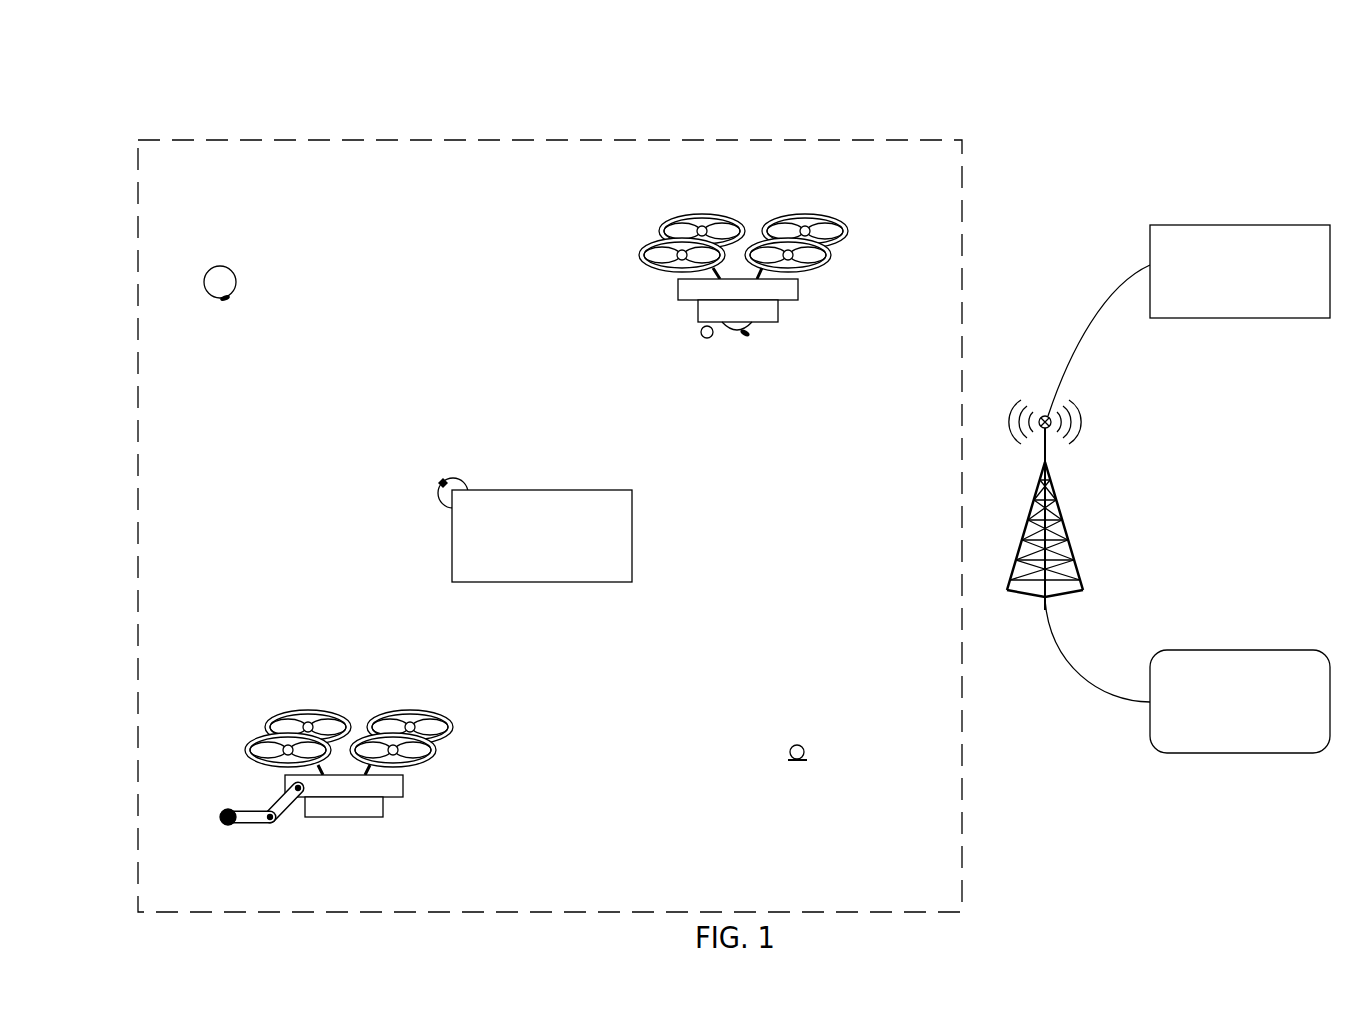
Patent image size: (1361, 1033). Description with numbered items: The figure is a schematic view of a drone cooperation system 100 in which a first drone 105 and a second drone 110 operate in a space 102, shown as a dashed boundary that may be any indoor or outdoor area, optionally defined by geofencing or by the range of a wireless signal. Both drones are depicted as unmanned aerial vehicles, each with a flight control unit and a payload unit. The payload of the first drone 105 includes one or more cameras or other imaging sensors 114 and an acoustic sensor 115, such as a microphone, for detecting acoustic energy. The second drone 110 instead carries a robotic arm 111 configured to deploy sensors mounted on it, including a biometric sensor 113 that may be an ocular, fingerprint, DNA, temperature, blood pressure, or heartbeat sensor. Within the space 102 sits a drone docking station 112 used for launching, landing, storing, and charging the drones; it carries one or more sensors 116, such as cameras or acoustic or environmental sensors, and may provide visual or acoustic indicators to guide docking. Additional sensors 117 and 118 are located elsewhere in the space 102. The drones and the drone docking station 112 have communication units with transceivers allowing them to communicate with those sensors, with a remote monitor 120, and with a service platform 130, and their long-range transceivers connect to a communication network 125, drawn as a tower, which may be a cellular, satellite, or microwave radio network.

The drone cooperation system 100 is at (1196, 62).
The space 102 is at (928, 140).
The first drone 105 is at (798, 297).
The second drone 110 is at (403, 793).
The robotic arm 111 is at (278, 797).
The drone docking station 112 is at (533, 582).
The biometric sensor 113 is at (236, 820).
The imaging sensor 114 is at (746, 337).
The acoustic sensor 115 is at (704, 334).
The sensor 116 is at (445, 505).
The sensor 117 is at (797, 757).
The sensor 118 is at (217, 268).
The remote monitor 120 is at (1242, 648).
The communication network 125 is at (1058, 527).
The service platform 130 is at (1243, 223).